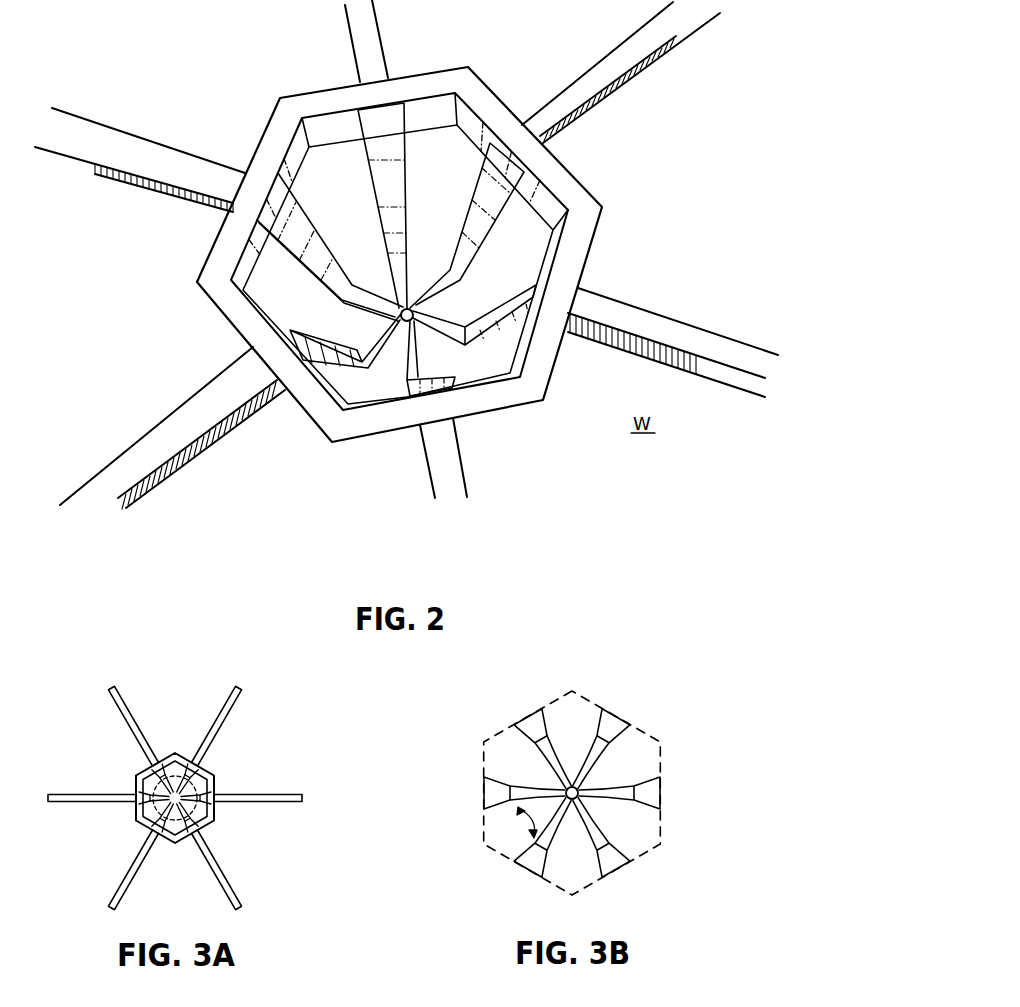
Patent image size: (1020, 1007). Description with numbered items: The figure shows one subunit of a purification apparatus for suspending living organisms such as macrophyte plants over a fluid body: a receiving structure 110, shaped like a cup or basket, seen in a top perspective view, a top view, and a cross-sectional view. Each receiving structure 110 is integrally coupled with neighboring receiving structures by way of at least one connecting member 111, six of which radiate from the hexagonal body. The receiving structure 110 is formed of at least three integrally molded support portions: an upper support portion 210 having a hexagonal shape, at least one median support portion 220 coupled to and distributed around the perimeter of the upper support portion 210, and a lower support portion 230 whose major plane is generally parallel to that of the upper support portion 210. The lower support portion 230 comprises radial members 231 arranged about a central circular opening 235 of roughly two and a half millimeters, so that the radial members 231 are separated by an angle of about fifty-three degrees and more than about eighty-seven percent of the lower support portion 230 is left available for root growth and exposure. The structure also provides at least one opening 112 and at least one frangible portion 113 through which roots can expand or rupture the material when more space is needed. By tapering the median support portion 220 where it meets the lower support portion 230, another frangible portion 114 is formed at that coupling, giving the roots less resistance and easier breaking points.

In FIG. 2, the receiving structure 110 is at (399, 247).
In FIG. 3A, the receiving structure 110 is at (226, 783).
In FIG. 2, the connecting member 111 is at (353, 33).
In FIG. 3A, the connecting member 111 is at (128, 713).
In FIG. 2, the opening 112 is at (527, 253).
In FIG. 2, the frangible portion 113 is at (398, 330).
In FIG. 3B, the frangible portion 113 is at (572, 786).
In FIG. 3B, the other frangible portion 114 is at (533, 838).
In FIG. 2, the upper support portion 210 is at (200, 284).
In FIG. 3A, the upper support portion 210 is at (212, 830).
In FIG. 2, the median support portion 220 is at (290, 258).
In FIG. 3A, the median support portion 220 is at (183, 843).
In FIG. 2, the lower support portion 230 is at (374, 337).
In FIG. 3A, the lower support portion 230 is at (213, 777).
In FIG. 3B, the lower support portion 230 is at (595, 792).
In FIG. 3B, the radial member 231 is at (522, 740).
In FIG. 3B, the opening 235 is at (617, 786).